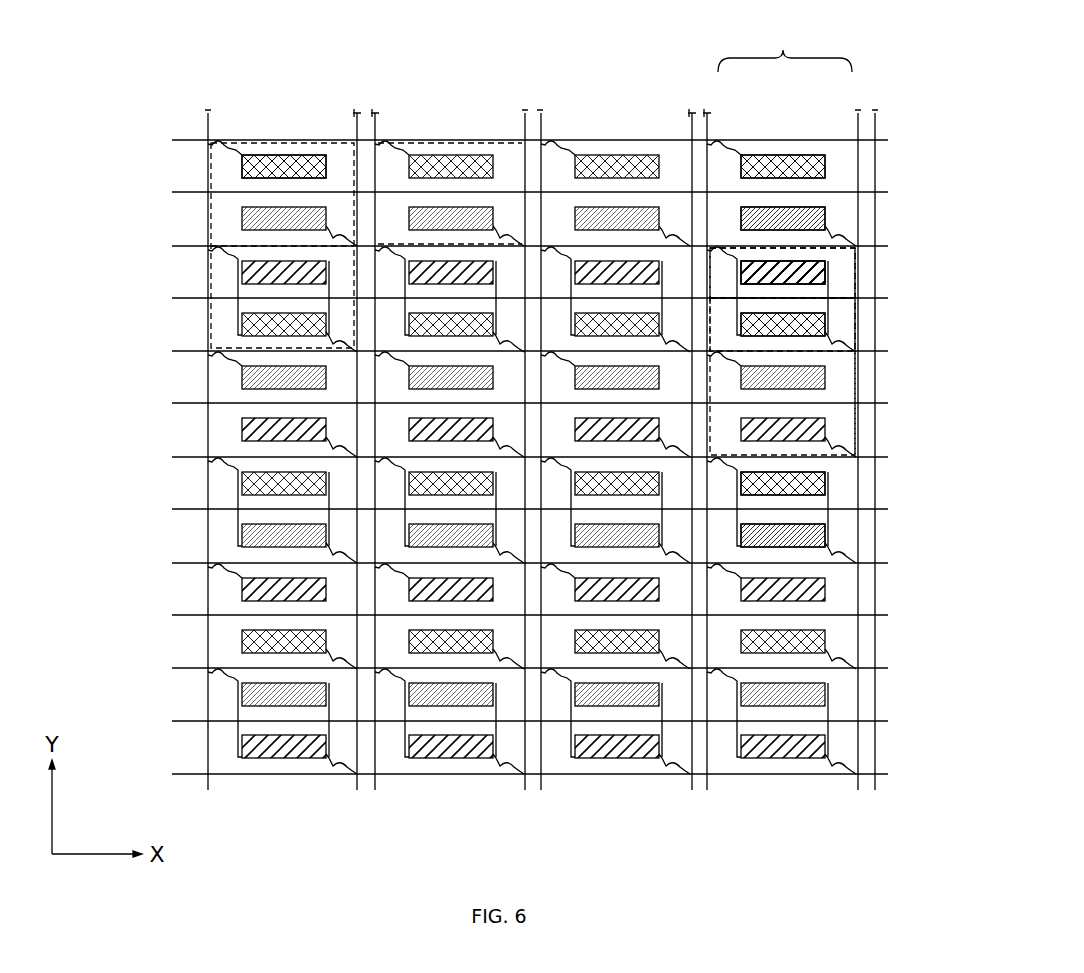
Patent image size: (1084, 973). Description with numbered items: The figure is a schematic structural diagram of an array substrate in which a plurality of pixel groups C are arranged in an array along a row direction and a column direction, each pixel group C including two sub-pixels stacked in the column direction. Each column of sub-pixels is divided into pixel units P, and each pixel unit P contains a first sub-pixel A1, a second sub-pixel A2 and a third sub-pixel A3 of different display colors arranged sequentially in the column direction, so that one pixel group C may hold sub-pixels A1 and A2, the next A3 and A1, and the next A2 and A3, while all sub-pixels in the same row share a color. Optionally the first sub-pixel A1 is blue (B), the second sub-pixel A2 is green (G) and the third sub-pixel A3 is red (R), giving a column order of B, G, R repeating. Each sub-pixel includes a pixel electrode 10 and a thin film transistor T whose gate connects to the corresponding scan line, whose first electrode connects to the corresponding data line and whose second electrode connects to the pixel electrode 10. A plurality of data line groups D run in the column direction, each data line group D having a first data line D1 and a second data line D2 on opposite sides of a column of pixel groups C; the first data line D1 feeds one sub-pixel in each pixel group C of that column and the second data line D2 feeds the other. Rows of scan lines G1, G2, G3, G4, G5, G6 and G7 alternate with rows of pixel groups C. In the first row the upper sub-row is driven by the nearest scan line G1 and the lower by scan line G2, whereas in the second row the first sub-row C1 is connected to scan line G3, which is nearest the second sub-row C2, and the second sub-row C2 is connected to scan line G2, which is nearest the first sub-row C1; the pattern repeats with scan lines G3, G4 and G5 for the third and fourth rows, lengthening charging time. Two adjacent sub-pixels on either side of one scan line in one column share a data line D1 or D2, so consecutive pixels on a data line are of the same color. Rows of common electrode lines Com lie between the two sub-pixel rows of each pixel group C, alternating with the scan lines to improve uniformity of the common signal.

The first data line D1 is at (550, 432).
The second data line D2 is at (599, 432).
The data line group D is at (785, 44).
The first row of scan line G1 is at (509, 140).
The second row of scan line G2 is at (509, 246).
The third row of scan line G3 is at (509, 352).
The fourth row of scan line G4 is at (509, 458).
The fifth row of scan line G5 is at (509, 564).
The sixth row of scan line G6 is at (509, 669).
The seventh row of scan line G7 is at (509, 775).
The common electrode line Com is at (499, 457).
The thin film transistor T is at (245, 140).
The pixel electrode 10 is at (288, 153).
The first sub-pixel A1 is at (533, 404).
The second sub-pixel A2 is at (533, 456).
The third sub-pixel A3 is at (533, 509).
The blue sub-pixel B is at (826, 164).
The green sub-pixel G is at (826, 216).
The red sub-pixel R is at (830, 271).
The pixel group C is at (273, 138).
The pixel unit P is at (858, 203).
The first sub-row of sub-pixels C1 is at (836, 279).
The second sub-row of sub-pixels C2 is at (836, 325).